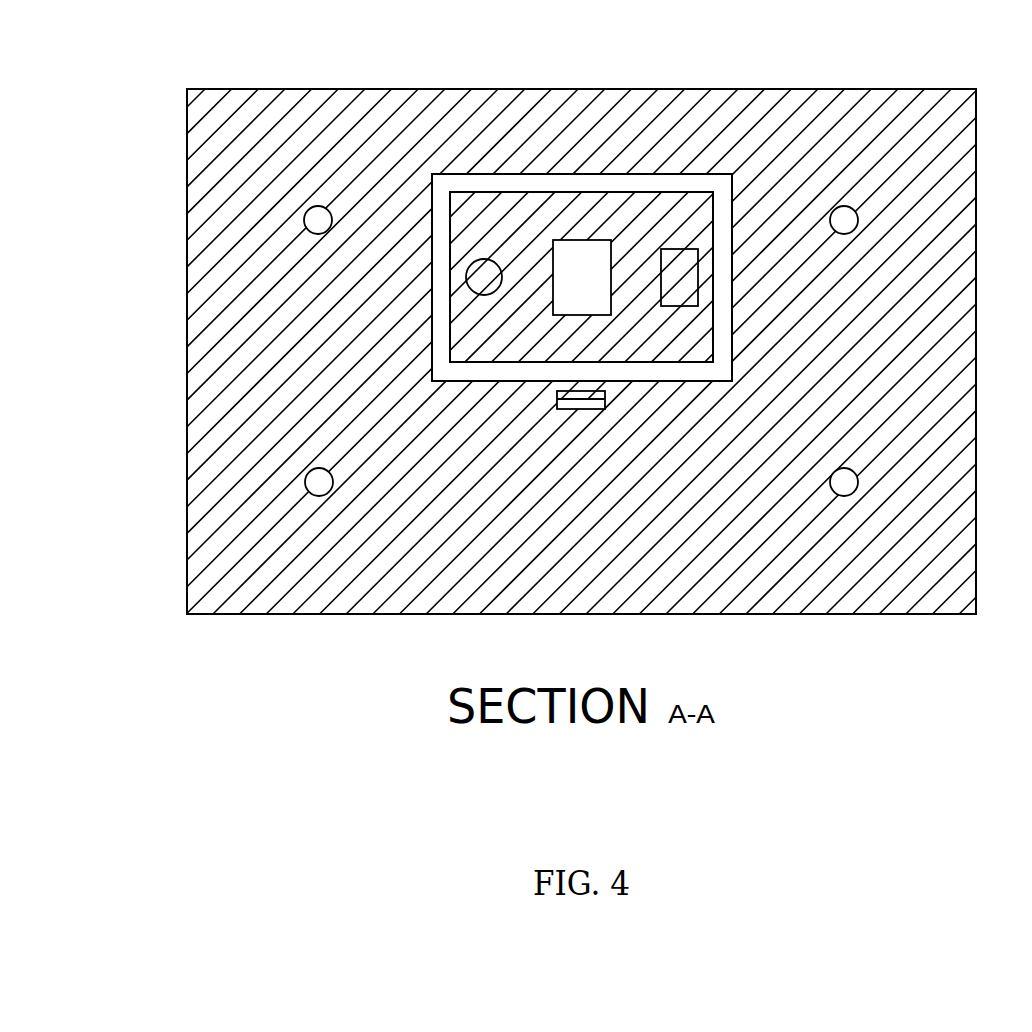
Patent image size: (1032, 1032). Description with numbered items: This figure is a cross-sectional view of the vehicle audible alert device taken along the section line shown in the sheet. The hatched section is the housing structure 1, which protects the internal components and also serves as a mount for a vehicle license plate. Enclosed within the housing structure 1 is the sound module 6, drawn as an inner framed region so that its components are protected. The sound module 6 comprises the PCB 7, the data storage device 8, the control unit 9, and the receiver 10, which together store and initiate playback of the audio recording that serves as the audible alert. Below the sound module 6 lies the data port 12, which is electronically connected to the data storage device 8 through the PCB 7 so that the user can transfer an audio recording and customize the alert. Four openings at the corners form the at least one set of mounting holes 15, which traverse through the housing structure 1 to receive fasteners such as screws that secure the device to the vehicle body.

The housing structure 1 is at (976, 91).
The sound module 6 is at (432, 382).
The PCB 7 is at (479, 222).
The data storage device 8 is at (596, 240).
The control unit 9 is at (661, 291).
The receiver 10 is at (490, 262).
The data port 12 is at (578, 410).
The at least one set of mounting holes 15 is at (318, 222).